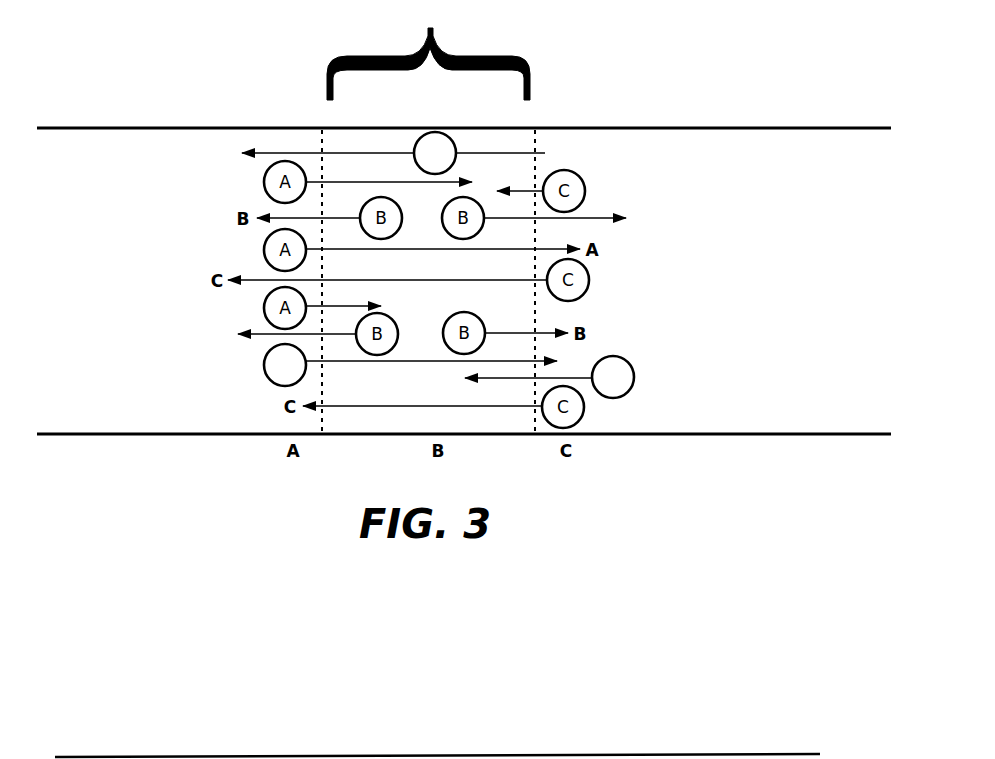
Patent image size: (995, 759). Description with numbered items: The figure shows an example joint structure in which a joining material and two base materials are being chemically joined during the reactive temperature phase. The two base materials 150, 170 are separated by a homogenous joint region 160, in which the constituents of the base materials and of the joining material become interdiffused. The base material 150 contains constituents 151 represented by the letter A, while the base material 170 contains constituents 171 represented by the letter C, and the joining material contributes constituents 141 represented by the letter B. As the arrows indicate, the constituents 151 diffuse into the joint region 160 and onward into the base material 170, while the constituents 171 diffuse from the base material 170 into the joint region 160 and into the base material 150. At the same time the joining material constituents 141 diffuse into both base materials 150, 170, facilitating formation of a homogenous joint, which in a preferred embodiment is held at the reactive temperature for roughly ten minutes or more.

The constituents of the joining material 141 is at (420, 140).
The base material 150 is at (165, 434).
The constituents of base material 151 is at (264, 368).
The homogenous joint region 160 is at (445, 52).
The base material 170 is at (652, 434).
The constituents of base material 171 is at (637, 363).